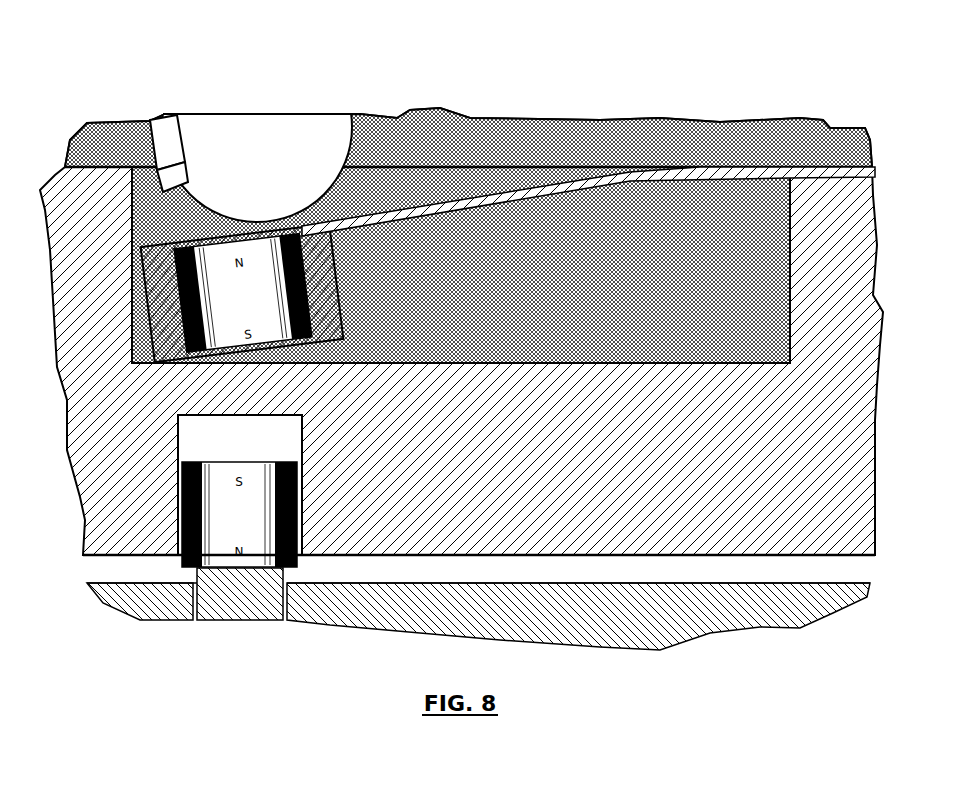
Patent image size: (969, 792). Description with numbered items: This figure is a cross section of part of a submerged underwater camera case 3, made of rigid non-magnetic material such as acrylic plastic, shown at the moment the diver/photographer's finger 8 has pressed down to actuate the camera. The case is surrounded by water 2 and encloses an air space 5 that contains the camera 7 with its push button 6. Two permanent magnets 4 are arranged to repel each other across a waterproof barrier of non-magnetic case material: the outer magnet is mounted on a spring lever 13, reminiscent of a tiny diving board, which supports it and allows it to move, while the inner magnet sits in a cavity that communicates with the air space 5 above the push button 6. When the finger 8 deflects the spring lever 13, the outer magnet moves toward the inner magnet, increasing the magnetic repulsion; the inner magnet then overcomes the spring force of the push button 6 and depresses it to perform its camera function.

The water 2 is at (675, 138).
The underwater camera case 3 is at (837, 243).
The permanent magnets 4 is at (360, 165).
The air space 5 is at (148, 565).
The push button 6 is at (197, 592).
The camera 7 is at (312, 617).
The finger 8 is at (253, 172).
The spring lever 13 is at (567, 172).